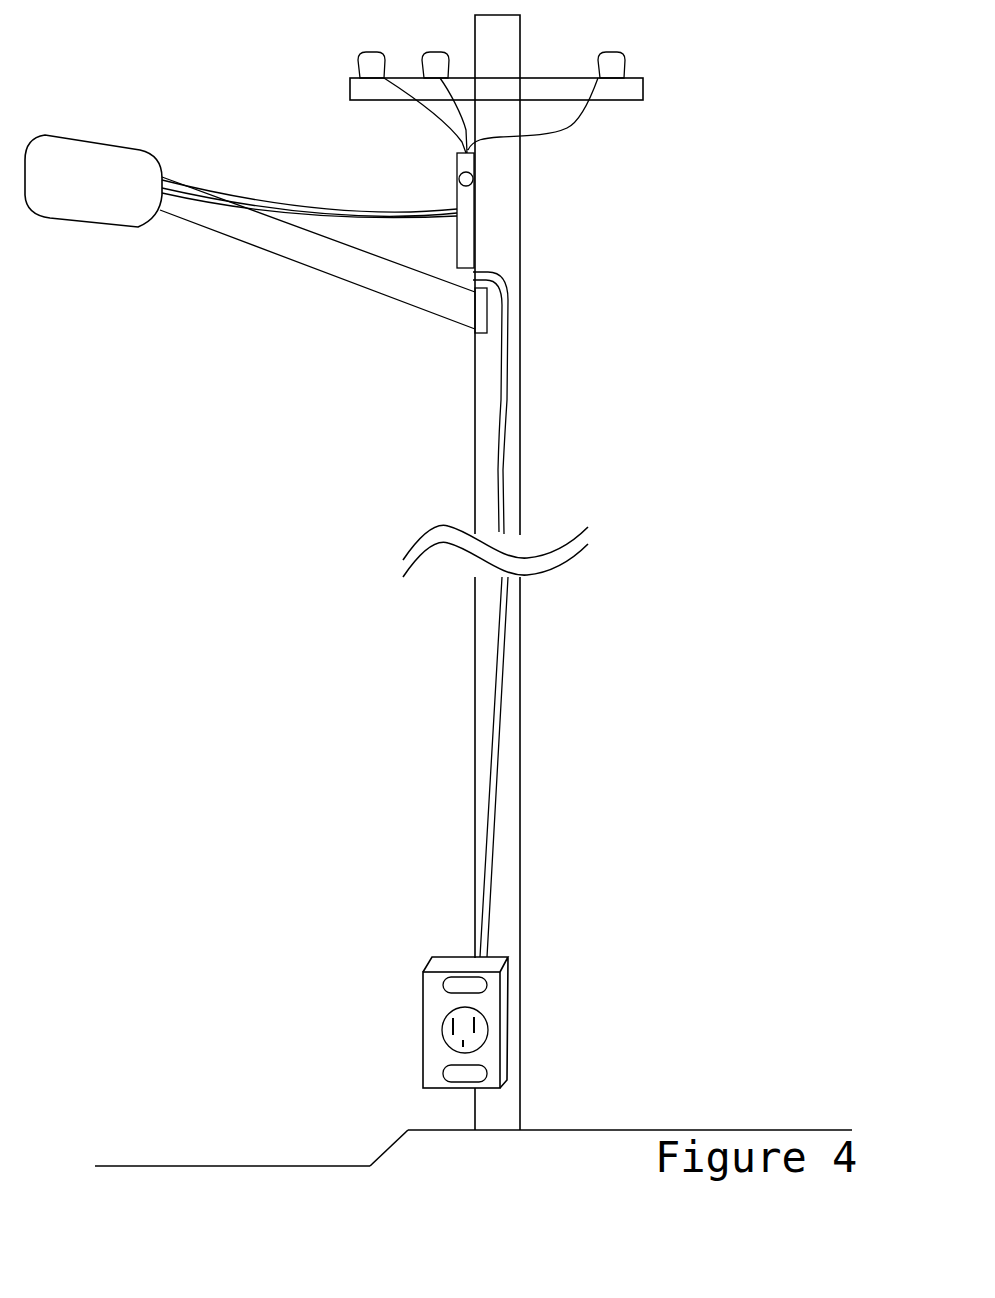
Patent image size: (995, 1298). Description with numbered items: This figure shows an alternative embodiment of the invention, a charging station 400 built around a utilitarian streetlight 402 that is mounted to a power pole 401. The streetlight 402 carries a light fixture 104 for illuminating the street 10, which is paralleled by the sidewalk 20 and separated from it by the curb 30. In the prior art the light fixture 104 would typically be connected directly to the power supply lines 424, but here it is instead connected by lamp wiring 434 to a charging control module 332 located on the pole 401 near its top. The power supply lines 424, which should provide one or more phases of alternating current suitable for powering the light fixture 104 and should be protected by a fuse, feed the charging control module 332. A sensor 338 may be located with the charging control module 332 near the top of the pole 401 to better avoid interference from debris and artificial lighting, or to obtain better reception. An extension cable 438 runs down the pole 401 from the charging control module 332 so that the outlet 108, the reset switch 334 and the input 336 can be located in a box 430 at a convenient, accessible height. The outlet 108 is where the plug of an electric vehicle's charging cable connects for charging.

The street 10 is at (222, 1166).
The sidewalk 20 is at (590, 1130).
The curb 30 is at (388, 1150).
The light fixture 104 is at (127, 229).
The outlet 108 is at (443, 1025).
The charging control module 332 is at (457, 196).
The reset switch 334 is at (443, 985).
The input 336 is at (443, 1073).
The sensor 338 is at (462, 171).
The charging station 400 is at (614, 1008).
The power pole 401 is at (477, 381).
The utilitarian streetlight 402 is at (370, 292).
The power supply lines 424 is at (426, 108).
The box 430 is at (452, 953).
The lamp wiring 434 is at (337, 208).
The extension cable 438 is at (503, 440).